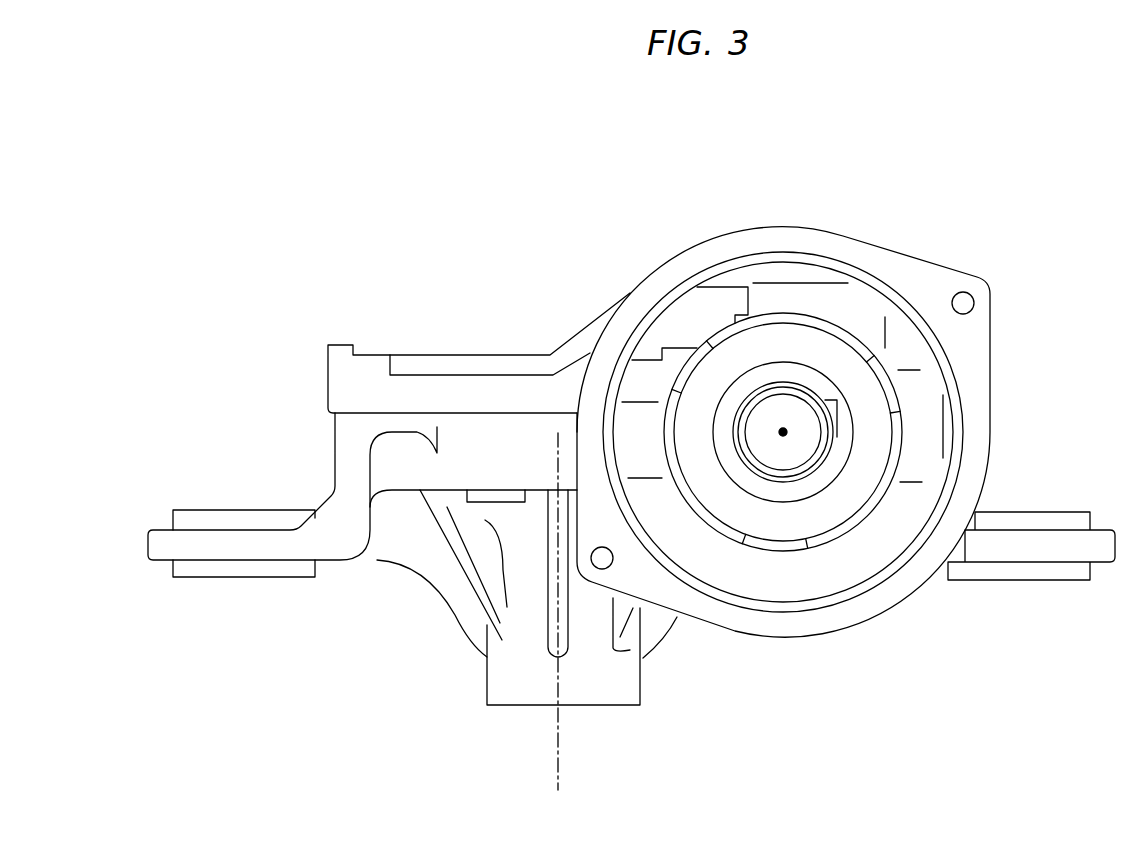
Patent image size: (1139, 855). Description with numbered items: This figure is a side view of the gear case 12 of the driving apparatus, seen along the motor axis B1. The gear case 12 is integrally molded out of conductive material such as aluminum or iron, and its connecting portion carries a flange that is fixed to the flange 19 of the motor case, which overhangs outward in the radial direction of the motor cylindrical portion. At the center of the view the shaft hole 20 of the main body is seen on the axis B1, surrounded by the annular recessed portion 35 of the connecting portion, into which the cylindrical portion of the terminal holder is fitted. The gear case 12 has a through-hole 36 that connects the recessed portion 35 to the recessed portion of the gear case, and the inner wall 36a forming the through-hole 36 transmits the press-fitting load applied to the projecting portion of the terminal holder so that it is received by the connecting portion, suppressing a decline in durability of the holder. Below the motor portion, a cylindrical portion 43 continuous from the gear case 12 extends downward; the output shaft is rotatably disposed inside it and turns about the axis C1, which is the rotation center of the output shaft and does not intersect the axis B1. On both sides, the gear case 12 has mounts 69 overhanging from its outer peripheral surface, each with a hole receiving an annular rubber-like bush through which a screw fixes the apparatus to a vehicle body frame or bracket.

The gear case 12 is at (508, 332).
The flange 19 is at (827, 245).
The shaft hole 20 is at (788, 455).
The annular recessed portion 35 is at (740, 577).
The through-hole 36 is at (683, 313).
The inner wall 36a is at (650, 360).
The cylindrical portion 43 is at (498, 680).
The mount 69 is at (227, 545).
The axis B1 is at (787, 431).
The axis C1 is at (557, 757).